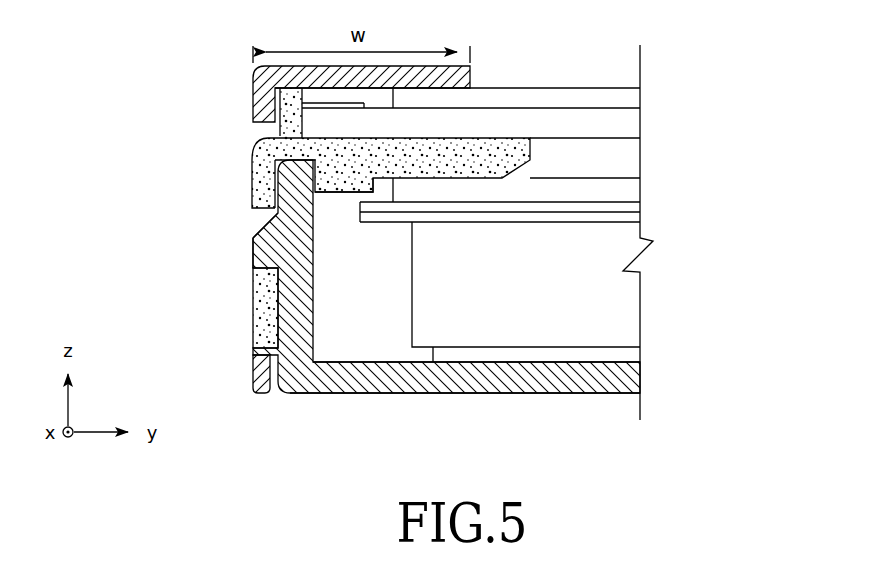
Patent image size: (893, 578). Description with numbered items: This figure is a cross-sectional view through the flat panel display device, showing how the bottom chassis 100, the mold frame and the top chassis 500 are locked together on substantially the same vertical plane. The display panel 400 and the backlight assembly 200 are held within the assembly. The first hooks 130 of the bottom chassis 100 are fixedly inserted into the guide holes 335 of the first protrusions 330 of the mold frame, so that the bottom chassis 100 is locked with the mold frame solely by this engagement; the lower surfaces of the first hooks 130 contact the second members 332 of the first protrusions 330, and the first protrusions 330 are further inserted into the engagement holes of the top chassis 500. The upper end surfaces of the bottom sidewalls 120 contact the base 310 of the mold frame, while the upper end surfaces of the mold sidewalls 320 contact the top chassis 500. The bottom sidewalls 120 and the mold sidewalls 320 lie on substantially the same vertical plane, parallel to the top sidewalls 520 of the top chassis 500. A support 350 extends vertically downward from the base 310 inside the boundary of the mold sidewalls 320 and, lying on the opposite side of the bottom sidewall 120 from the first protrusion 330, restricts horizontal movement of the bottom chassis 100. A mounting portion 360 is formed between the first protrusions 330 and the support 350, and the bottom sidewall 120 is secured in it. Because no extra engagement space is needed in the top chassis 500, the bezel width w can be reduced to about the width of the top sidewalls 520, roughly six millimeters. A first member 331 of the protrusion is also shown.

The bottom chassis 100 is at (398, 375).
The bottom sidewalls 120 is at (290, 189).
The first hooks 130 is at (253, 245).
The backlight assembly 200 is at (629, 314).
The base 310 is at (523, 155).
The mold sidewalls 320 is at (293, 100).
The first protrusions 330 is at (397, 215).
The first sealing portion 331 is at (264, 139).
The second members 332 is at (253, 303).
The guide holes 335 is at (268, 220).
The support 350 is at (343, 182).
The mounting portion 360 is at (272, 167).
The display panel 400 is at (624, 99).
The top chassis 500 is at (236, 73).
The top sidewalls 520 is at (253, 107).